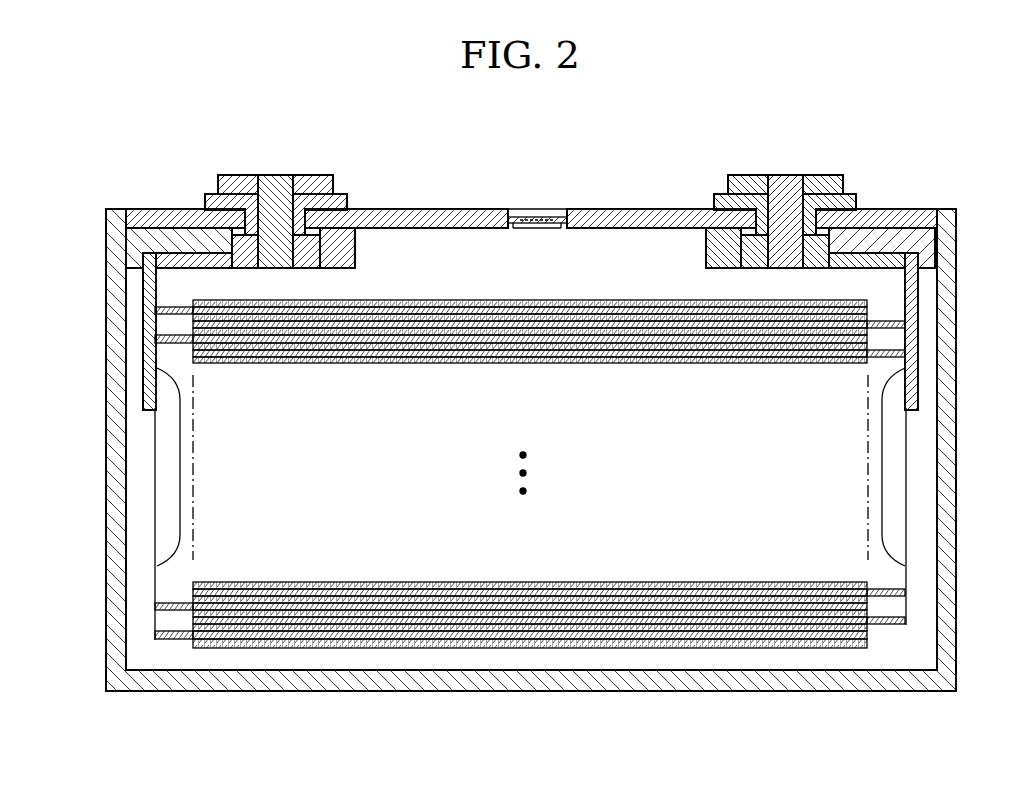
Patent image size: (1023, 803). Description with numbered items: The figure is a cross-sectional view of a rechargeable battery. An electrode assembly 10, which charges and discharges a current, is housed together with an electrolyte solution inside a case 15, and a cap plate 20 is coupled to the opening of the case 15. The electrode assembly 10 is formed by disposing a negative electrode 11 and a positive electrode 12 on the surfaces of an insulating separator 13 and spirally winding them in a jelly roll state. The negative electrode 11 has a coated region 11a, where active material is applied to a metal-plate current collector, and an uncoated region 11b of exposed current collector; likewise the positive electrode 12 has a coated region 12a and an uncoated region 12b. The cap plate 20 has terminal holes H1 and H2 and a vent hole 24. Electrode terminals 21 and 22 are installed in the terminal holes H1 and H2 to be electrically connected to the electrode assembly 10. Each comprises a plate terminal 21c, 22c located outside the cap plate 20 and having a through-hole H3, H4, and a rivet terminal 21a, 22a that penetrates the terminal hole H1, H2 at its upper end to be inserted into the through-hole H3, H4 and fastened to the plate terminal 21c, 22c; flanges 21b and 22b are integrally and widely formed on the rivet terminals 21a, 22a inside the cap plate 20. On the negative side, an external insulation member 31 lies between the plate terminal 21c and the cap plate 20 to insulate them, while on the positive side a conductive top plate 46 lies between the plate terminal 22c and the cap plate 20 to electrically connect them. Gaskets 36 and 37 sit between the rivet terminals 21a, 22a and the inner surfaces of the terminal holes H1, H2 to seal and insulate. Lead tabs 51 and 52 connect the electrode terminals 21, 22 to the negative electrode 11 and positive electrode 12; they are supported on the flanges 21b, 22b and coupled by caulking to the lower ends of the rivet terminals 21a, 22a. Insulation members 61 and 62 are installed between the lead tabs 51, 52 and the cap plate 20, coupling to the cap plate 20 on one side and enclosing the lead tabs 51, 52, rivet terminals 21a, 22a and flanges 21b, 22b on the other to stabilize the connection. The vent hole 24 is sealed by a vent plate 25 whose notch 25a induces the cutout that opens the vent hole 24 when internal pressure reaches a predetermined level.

The electrode assembly 10 is at (530, 544).
The negative electrode 11 is at (509, 547).
The coated region of the negative electrode 11a is at (283, 640).
The uncoated region of the negative electrode 11b is at (172, 527).
The positive electrode 12 is at (551, 551).
The coated region of the positive electrode 12a is at (762, 620).
The uncoated region of the positive electrode 12b is at (888, 531).
The separator 13 is at (515, 642).
The case 15 is at (945, 393).
The cap plate 20 is at (452, 220).
The electrode terminal 21 is at (306, 258).
The rivet terminal 21a is at (275, 268).
The flange 21b is at (340, 240).
The plate terminal 21c is at (230, 178).
The electrode terminal 22 is at (745, 255).
The rivet terminal 22a is at (786, 268).
The flange 22b is at (712, 245).
The plate terminal 22c is at (830, 178).
The vent hole 24 is at (537, 229).
The vent plate 25 is at (563, 216).
The notch 25a is at (535, 216).
The external insulation member 31 is at (345, 196).
The gasket 36 is at (207, 205).
The gasket 37 is at (855, 205).
The conductive top plate 46 is at (716, 198).
The lead tab 51 is at (145, 300).
The lead tab 52 is at (917, 300).
The insulation member 61 is at (140, 243).
The insulation member 62 is at (920, 243).
The terminal hole H1 is at (303, 195).
The terminal hole H2 is at (758, 195).
The through-hole H3 is at (265, 185).
The through-hole H4 is at (795, 185).